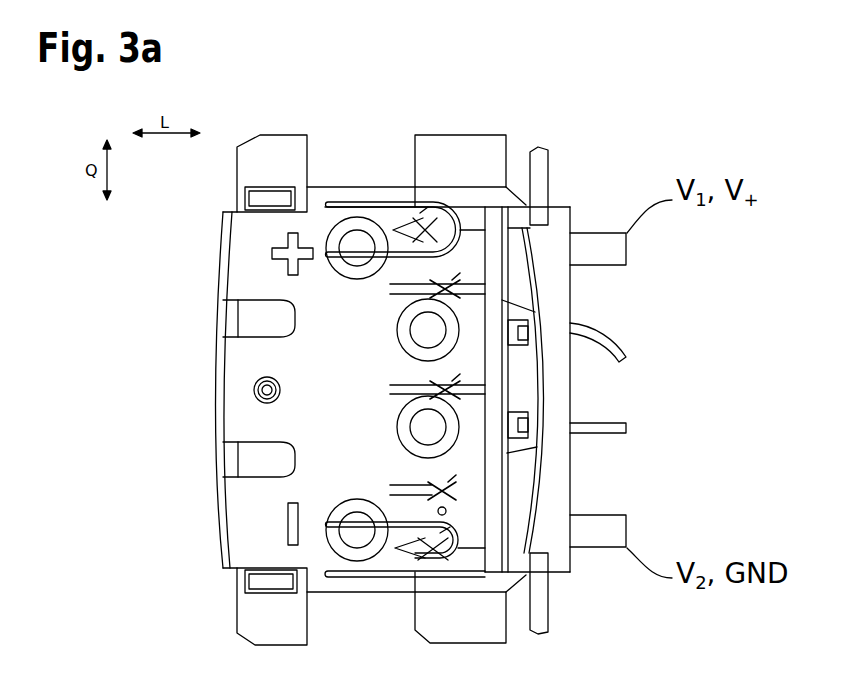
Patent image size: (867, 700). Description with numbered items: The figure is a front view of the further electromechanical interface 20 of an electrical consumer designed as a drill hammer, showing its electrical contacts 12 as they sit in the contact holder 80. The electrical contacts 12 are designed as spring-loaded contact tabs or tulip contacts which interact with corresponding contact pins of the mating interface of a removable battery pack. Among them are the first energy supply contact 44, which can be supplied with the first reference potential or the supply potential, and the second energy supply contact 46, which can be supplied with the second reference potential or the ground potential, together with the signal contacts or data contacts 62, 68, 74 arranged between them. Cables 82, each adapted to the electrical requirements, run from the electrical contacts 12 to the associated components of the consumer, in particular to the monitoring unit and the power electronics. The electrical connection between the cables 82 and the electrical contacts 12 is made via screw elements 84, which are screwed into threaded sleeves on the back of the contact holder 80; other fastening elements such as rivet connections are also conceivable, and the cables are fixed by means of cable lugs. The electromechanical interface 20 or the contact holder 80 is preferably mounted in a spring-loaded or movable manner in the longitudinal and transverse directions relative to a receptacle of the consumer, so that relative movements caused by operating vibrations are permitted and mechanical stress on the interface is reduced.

The electromechanical interface 20 is at (645, 115).
The contact holder 80 is at (271, 150).
The electrical contacts 12 is at (537, 391).
The first energy supply contact 44 is at (357, 200).
The second energy supply contact 46 is at (358, 600).
The signal contact 62 is at (455, 288).
The signal contact 68 is at (455, 388).
The signal contact 74 is at (455, 490).
The cables 82 is at (608, 255).
The screw elements 84 is at (357, 248).